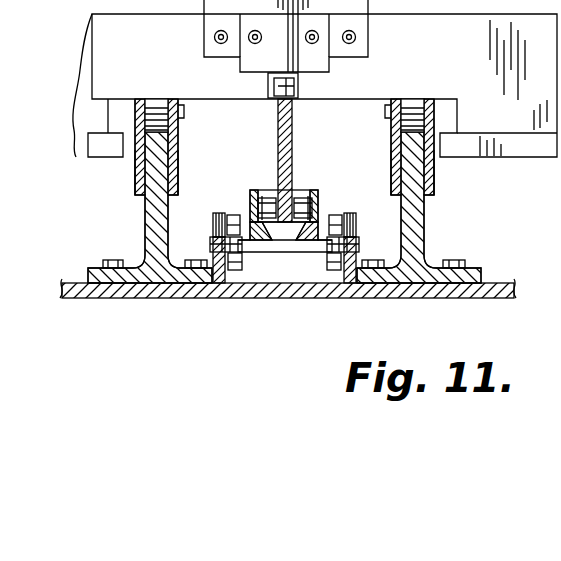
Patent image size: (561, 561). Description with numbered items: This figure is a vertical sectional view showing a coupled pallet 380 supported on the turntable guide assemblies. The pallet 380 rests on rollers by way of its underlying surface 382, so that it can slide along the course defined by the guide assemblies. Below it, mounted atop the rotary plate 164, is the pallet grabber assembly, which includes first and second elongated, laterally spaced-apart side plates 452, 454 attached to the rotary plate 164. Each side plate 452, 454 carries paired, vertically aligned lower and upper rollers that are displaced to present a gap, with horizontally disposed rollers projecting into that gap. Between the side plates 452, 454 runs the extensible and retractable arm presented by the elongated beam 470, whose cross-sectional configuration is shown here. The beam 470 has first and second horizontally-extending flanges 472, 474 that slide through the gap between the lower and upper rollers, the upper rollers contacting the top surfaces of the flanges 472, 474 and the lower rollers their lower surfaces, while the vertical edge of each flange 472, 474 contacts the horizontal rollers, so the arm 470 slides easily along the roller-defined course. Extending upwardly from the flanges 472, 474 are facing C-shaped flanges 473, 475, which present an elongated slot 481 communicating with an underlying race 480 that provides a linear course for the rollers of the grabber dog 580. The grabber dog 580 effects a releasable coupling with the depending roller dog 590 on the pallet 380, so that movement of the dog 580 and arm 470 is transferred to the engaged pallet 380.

The rotary plate 164 is at (138, 297).
The pallet 380 is at (315, 85).
The underlying surface 382 is at (238, 100).
The first side plate 452 is at (213, 259).
The second side plate 454 is at (357, 265).
The elongated beam 470 is at (283, 210).
The first horizontally-extending flange 472 is at (258, 244).
The second horizontally-extending flange 474 is at (316, 244).
The C-shaped flange 473 is at (252, 200).
The C-shaped flange 475 is at (306, 200).
The race 480 is at (316, 216).
The elongated slot 481 is at (266, 198).
The grabber dog 580 is at (294, 114).
The roller dog 590 is at (300, 87).